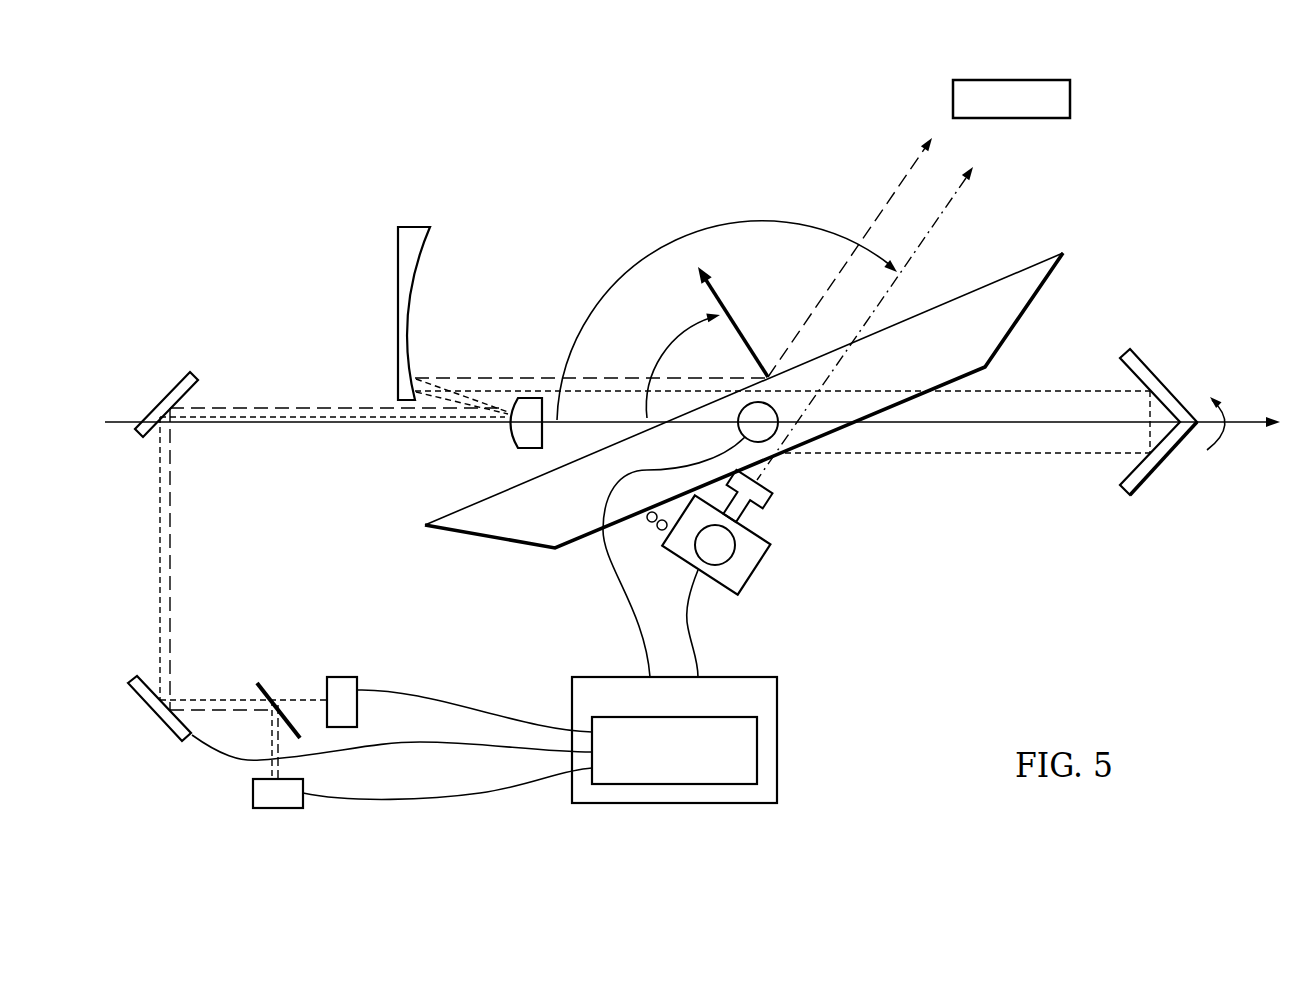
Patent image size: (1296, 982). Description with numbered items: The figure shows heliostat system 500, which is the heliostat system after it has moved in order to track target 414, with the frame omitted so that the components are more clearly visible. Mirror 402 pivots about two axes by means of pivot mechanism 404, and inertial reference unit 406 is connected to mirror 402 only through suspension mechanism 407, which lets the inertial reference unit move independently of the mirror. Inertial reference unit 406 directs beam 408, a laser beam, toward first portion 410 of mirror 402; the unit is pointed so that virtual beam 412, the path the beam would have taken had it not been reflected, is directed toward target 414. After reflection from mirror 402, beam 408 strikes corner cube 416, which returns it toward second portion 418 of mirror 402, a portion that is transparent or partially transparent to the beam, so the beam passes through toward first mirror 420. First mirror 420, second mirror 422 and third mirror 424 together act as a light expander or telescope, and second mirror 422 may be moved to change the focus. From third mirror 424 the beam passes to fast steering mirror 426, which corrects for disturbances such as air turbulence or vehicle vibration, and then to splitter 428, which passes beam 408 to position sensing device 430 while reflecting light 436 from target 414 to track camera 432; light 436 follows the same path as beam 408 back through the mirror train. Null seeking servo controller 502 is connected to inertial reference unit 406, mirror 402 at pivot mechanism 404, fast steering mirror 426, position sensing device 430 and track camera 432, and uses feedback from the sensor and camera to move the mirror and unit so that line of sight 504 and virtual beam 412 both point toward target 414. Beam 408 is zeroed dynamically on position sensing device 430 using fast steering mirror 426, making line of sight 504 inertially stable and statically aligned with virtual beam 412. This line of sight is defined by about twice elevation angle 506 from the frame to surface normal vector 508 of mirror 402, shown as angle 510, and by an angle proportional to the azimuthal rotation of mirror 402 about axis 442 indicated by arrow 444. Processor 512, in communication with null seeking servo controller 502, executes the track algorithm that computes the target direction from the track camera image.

The heliostat system 500 is at (268, 121).
The mirror 402 is at (976, 289).
The pivot mechanism 404 is at (738, 428).
The inertial reference unit 406 is at (758, 567).
The suspension mechanism 407 is at (650, 522).
The beam 408 is at (270, 421).
The first portion 410 is at (784, 461).
The virtual beam 412 is at (958, 190).
The target 414 is at (1071, 100).
The corner cube 416 is at (1145, 370).
The second portion 418 is at (922, 389).
The first mirror 420 is at (397, 313).
The second mirror 422 is at (508, 432).
The third mirror 424 is at (168, 398).
The fast steering mirror 426 is at (157, 715).
The splitter 428 is at (272, 684).
The position sensing device 430 is at (343, 677).
The track camera 432 is at (270, 809).
The light 436 is at (891, 197).
The axis 442 is at (1250, 420).
The arrow 444 is at (1207, 448).
The null seeking servo controller 502 is at (656, 763).
The line of sight 504 is at (926, 141).
The elevation angle 506 is at (668, 346).
The surface normal vector 508 is at (716, 294).
The angle 510 is at (659, 249).
The processor 512 is at (779, 740).